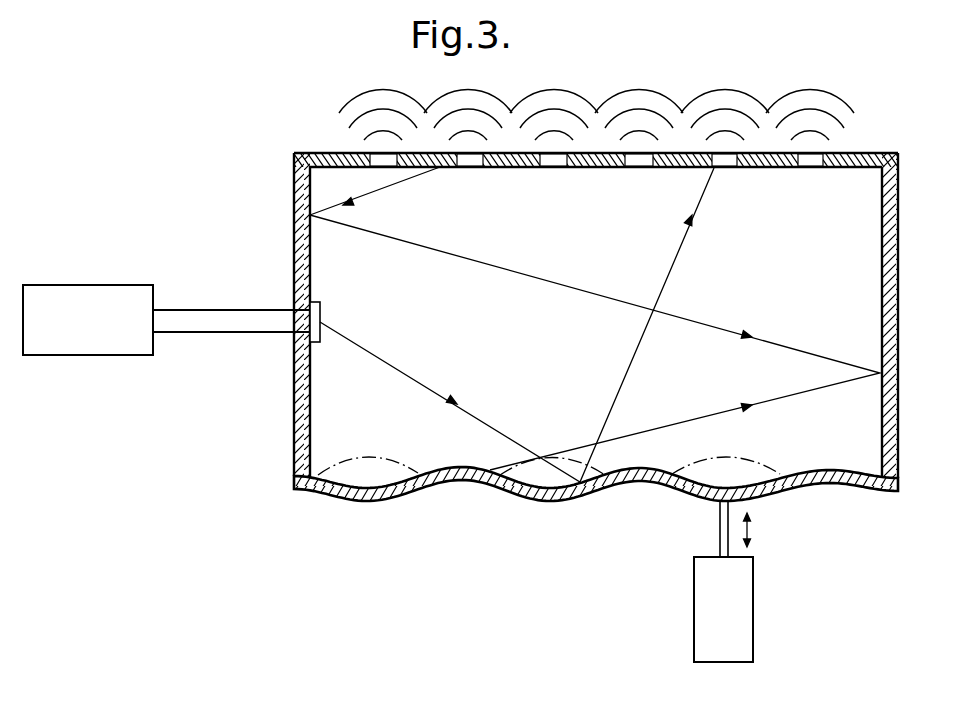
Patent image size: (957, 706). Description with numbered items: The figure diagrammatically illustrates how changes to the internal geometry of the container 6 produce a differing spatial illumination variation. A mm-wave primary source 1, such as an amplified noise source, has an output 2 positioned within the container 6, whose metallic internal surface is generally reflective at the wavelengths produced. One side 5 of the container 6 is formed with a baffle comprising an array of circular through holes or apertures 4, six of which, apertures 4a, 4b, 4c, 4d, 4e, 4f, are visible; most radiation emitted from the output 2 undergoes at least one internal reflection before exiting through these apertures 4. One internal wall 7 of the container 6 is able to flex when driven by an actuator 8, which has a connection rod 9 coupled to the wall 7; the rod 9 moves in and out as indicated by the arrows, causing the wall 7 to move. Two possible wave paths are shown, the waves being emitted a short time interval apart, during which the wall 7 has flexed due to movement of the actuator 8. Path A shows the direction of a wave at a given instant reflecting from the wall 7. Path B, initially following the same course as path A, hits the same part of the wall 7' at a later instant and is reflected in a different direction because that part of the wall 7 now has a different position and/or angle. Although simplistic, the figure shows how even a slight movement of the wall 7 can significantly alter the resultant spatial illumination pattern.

The mm-wave primary source 1 is at (93, 292).
The output 2 is at (322, 338).
The apertures 4 is at (370, 120).
The aperture 4a is at (383, 168).
The aperture 4b is at (470, 168).
The aperture 4c is at (553, 168).
The aperture 4d is at (637, 168).
The aperture 4e is at (723, 168).
The aperture 4f is at (810, 168).
The side 5 is at (592, 168).
The container 6 is at (300, 183).
The internal wall 7 is at (596, 512).
The wall at later instant 7' is at (549, 440).
The actuator 8 is at (725, 607).
The connection rod 9 is at (717, 530).
The path A is at (683, 240).
The path B is at (785, 346).